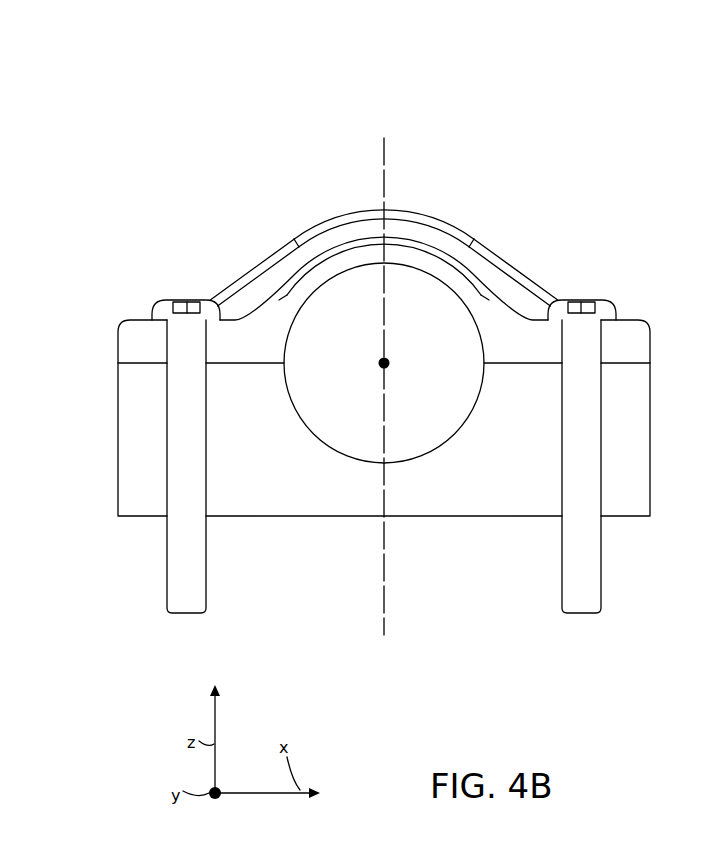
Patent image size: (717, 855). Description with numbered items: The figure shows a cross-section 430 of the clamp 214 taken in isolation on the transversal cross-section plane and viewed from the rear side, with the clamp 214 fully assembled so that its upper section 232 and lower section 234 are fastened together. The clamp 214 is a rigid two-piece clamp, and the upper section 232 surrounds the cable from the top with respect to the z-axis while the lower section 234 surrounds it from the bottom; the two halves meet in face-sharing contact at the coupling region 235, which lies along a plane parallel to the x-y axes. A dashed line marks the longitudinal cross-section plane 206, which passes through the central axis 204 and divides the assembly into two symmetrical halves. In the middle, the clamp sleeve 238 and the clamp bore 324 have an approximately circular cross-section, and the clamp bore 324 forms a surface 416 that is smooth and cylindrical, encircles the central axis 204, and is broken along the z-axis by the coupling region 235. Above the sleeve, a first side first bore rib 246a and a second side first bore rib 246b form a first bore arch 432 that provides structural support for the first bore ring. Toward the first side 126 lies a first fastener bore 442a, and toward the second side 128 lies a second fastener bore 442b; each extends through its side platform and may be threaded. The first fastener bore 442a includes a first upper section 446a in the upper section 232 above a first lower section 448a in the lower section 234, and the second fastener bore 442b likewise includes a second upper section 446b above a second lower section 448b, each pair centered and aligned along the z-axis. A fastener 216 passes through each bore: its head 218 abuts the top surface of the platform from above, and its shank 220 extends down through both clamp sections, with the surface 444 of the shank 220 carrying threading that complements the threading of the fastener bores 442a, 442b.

The cross-section 430 is at (503, 44).
The longitudinal cross-section plane 206 is at (382, 155).
The clamp 214 is at (383, 90).
The clamp bore 324 is at (384, 363).
The central axis 204 is at (381, 352).
The first bore arch 432 is at (407, 223).
The first side first bore rib 246a is at (280, 338).
The second side first bore rib 246b is at (552, 292).
The clamp sleeve 238 is at (438, 248).
The upper section 232 is at (248, 275).
The coupling region 235 is at (243, 367).
The lower section 234 is at (348, 497).
The surface 416 is at (485, 362).
The first side 126 is at (111, 418).
The second side 128 is at (651, 418).
The surface of the shank 444 is at (384, 466).
The head 218 is at (163, 300).
The shank 220 is at (198, 560).
The fastener 216 is at (160, 588).
The first upper section 446a is at (167, 350).
The first fastener bore 442a is at (160, 425).
The first lower section 448a is at (167, 483).
The second upper section 446b is at (602, 349).
The second fastener bore 442b is at (606, 425).
The second lower section 448b is at (602, 485).